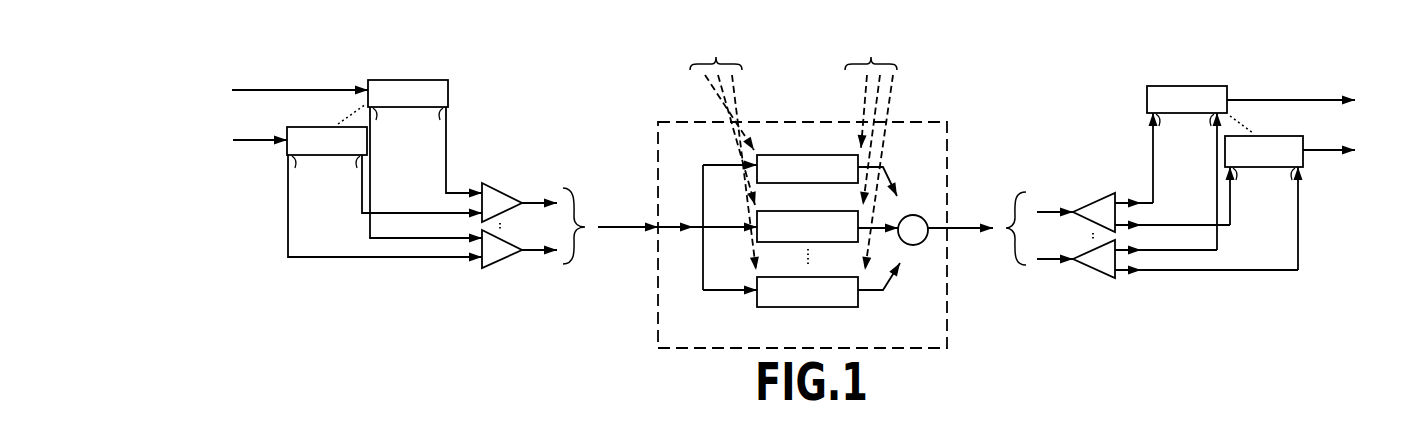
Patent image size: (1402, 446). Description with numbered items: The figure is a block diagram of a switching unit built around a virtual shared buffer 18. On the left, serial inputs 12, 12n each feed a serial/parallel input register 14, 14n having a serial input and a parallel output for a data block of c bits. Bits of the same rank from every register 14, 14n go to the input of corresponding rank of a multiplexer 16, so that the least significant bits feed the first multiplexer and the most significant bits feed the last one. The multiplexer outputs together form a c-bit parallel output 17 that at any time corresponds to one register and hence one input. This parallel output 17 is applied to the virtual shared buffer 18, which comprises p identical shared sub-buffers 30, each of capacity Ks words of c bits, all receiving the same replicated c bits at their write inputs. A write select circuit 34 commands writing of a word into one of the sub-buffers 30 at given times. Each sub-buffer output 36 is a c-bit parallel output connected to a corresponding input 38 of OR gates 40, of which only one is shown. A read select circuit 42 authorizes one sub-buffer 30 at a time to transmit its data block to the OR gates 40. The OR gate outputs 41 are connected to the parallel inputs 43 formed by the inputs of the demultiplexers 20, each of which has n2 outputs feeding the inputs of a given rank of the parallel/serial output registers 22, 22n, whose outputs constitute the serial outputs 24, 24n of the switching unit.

The input 12 is at (282, 89).
The input 12n is at (236, 139).
The serial/parallel input register 14 is at (413, 90).
The serial/parallel input register 14n is at (289, 153).
The multiplexer 16 is at (497, 198).
The parallel output 17 is at (610, 226).
The virtual shared buffer 18 is at (697, 337).
The demultiplexer 20 is at (1085, 290).
The parallel/serial output register 22 is at (1198, 98).
The parallel/serial output register 22n is at (1290, 157).
The serial output 24 is at (1310, 95).
The serial output 24n is at (1352, 149).
The shared sub-buffer 30 is at (813, 303).
The write select circuit 34 is at (725, 149).
The output of shared sub-buffer 36 is at (863, 162).
The input of OR gate 38 is at (922, 218).
The OR gate 40 is at (922, 242).
The output of OR gate 41 is at (914, 232).
The read select circuit 42 is at (871, 149).
The parallel input 43 is at (977, 228).